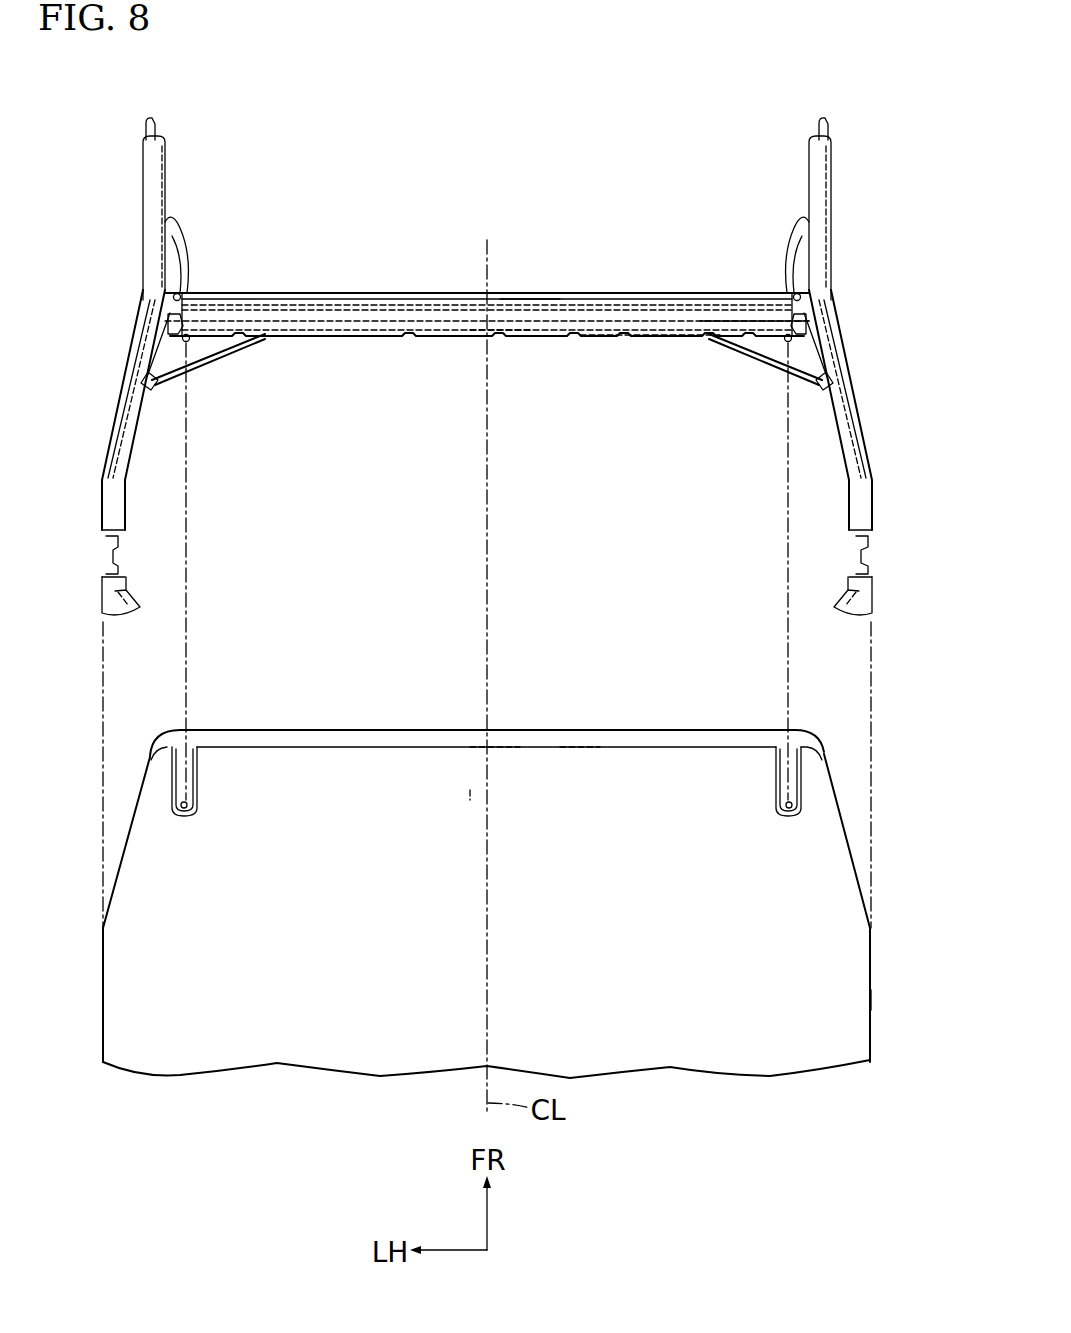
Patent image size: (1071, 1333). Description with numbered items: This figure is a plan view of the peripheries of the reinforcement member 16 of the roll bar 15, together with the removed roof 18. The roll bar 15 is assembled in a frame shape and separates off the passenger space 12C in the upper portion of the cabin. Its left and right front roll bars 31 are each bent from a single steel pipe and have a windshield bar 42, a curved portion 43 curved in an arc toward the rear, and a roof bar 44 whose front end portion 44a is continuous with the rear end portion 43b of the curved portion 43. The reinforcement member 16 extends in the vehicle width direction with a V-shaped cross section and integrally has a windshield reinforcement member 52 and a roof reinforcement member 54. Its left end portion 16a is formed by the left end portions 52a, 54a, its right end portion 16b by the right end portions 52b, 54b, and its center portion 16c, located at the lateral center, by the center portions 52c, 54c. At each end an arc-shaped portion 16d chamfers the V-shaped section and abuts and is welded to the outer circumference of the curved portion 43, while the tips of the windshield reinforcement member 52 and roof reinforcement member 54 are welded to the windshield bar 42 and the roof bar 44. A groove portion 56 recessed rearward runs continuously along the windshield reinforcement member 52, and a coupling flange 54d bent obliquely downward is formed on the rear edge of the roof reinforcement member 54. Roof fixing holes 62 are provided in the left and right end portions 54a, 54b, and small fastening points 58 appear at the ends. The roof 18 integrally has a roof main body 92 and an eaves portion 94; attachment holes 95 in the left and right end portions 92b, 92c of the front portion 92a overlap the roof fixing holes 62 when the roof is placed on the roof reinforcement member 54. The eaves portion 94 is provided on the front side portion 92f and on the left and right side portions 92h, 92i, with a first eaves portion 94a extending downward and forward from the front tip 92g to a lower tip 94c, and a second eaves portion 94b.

The roll bar 15 is at (850, 145).
The reinforcement member 16 is at (487, 204).
The left end portion 16a is at (487, 361).
The right end portion 16b is at (685, 253).
The center portion 16c is at (539, 380).
The arc-shaped portion 16d is at (180, 325).
The roof 18 is at (489, 827).
The front roll bar 31 is at (130, 243).
The windshield bar 42 is at (150, 192).
The curved portion 43 is at (172, 312).
The rear end portion 43b is at (148, 371).
The roof bar 44 is at (118, 462).
The front end portion 44a is at (138, 400).
The windshield reinforcement member 52 is at (399, 290).
The left end portion 52a is at (203, 290).
The right end portion 52b is at (778, 295).
The center portion 52c is at (528, 300).
The roof reinforcement member 54 is at (458, 322).
The left end portion 54a is at (203, 341).
The right end portion 54b is at (778, 322).
The center portion 54c is at (500, 332).
The coupling flange 54d is at (708, 338).
The groove portion 56 is at (332, 300).
The fastening bolt 58 is at (175, 294).
The roof fixing hole 62 is at (188, 343).
The passenger space 12C is at (432, 515).
The roof main body 92 is at (486, 850).
The front portion 92a is at (468, 790).
The left end portion 92b is at (178, 833).
The right end portion 92c is at (792, 833).
The front side portion 92f is at (630, 768).
The front tip 92g is at (581, 747).
The left side portion 92h is at (112, 1013).
The right side portion 92i is at (855, 1028).
The eaves portion 94 is at (489, 816).
The first eaves portion 94a is at (495, 737).
The second eaves portion 94b is at (100, 992).
The lower tip 94c is at (362, 727).
The attachment hole 95 is at (178, 805).